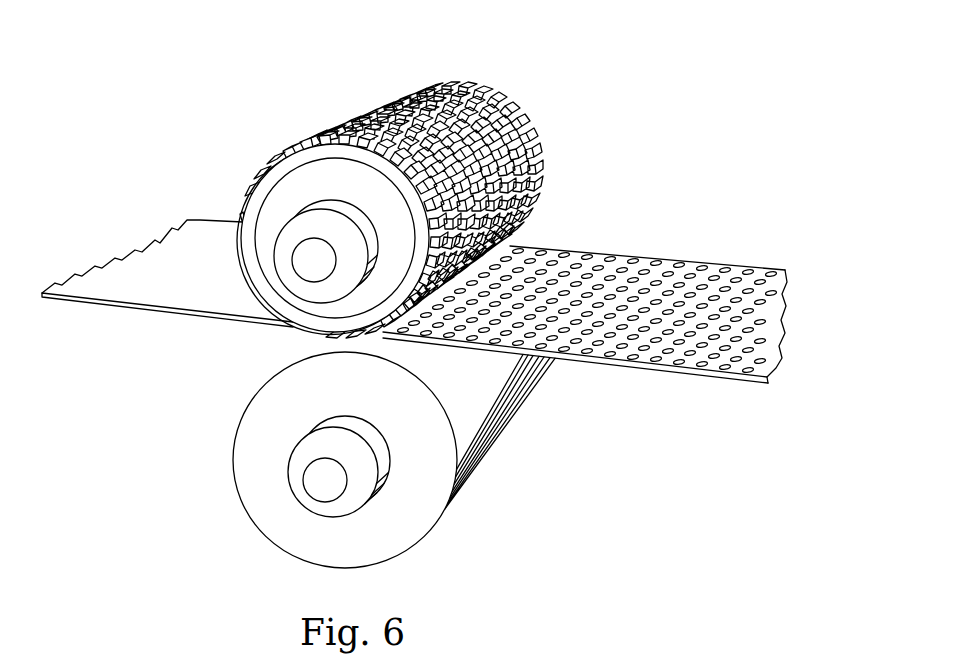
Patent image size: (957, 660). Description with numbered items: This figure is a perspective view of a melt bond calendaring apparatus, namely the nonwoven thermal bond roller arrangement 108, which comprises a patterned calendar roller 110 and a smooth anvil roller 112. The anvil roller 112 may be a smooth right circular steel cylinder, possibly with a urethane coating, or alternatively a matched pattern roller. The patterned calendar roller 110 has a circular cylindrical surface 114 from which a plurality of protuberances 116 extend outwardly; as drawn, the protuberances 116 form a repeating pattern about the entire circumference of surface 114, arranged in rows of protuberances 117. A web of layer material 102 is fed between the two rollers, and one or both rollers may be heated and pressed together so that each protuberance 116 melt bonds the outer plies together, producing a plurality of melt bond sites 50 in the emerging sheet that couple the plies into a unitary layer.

The melt bond sites 50 is at (608, 272).
The sheet material web 102 is at (140, 272).
The nonwoven thermal bond roller arrangement 108 is at (395, 199).
The patterned calendar roller 110 is at (313, 312).
The smooth anvil roller 112 is at (252, 434).
The circular cylindrical surface 114 is at (328, 130).
The protuberances 116 is at (250, 180).
The rows of protrusions 117 is at (373, 130).